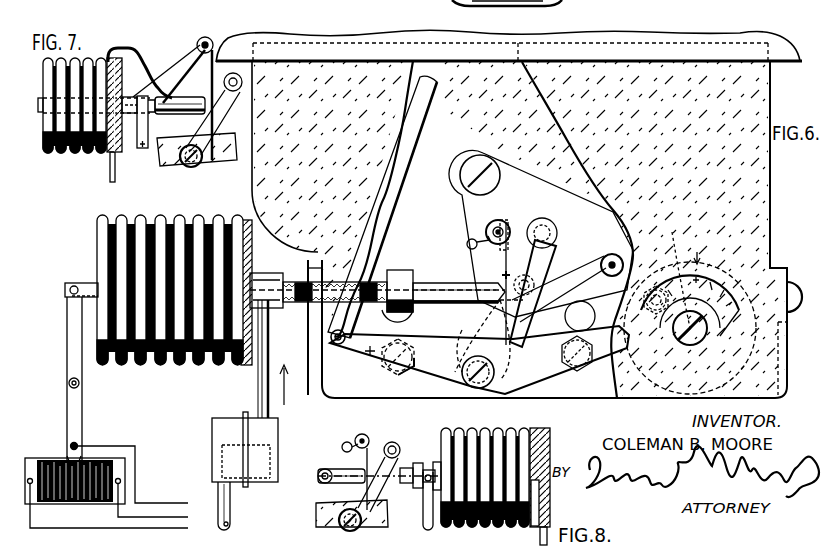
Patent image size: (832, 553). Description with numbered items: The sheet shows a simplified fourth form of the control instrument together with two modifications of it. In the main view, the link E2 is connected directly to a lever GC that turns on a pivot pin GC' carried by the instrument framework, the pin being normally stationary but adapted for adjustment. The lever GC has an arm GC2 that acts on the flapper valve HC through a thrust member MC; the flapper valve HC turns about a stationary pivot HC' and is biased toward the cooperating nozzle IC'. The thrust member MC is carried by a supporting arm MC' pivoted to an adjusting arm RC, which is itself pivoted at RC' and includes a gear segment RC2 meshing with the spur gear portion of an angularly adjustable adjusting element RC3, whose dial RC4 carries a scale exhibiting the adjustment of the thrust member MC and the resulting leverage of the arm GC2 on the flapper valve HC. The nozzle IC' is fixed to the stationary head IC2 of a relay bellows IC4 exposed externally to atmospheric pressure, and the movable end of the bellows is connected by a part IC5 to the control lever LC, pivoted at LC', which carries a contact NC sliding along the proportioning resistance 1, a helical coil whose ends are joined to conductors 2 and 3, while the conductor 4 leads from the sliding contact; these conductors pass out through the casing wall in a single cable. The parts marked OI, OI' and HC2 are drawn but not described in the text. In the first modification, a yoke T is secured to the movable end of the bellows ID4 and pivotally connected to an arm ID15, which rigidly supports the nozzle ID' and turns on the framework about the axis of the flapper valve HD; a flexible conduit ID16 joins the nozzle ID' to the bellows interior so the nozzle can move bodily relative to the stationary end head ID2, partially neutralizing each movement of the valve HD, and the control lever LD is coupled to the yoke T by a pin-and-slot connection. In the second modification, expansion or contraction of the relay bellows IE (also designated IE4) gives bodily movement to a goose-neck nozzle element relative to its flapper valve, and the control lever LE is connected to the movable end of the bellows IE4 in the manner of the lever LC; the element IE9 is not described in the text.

In FIG. 7, the flexible conduit ID16 is at (130, 50).
In FIG. 7, the arm ID15 is at (179, 68).
In FIG. 7, the nozzle ID' is at (180, 117).
In FIG. 7, the flapper valve HD is at (215, 117).
In FIG. 7, the yoke T is at (40, 108).
In FIG. 7, the relay bellows ID4 is at (72, 152).
In FIG. 7, the rod OI is at (92, 176).
In FIG. 8, the rod OI is at (527, 538).
In FIG. 7, the stationary end head ID2 is at (122, 150).
In FIG. 7, the control lever LD is at (143, 150).
In FIG. 6, the link E2 is at (420, 134).
In FIG. 6, the nozzle IC' is at (377, 280).
In FIG. 6, the stationary head IC2 is at (250, 270).
In FIG. 6, the relay bellows IC4 is at (152, 365).
In FIG. 6, the connecting part IC5 is at (86, 285).
In FIG. 6, the control lever LC is at (89, 387).
In FIG. 6, the pivot LC' is at (54, 382).
In FIG. 6, the contact NC is at (70, 468).
In FIG. 6, the electrical resistance 1 is at (50, 460).
In FIG. 6, the conductor 2 is at (118, 528).
In FIG. 6, the conductor 3 is at (150, 517).
In FIG. 6, the conductor 4 is at (135, 462).
In FIG. 6, the solenoid OI' is at (250, 415).
In FIG. 6, the lever GC is at (429, 364).
In FIG. 6, the pivot pin GC' is at (412, 321).
In FIG. 6, the arm GC2 is at (513, 330).
In FIG. 6, the thrust member MC is at (479, 365).
In FIG. 6, the supporting arm MC' is at (556, 316).
In FIG. 6, the flapper valve HC is at (541, 249).
In FIG. 6, the stationary pivot HC' is at (490, 274).
In FIG. 6, the hook HC2 is at (498, 250).
In FIG. 6, the adjusting arm RC is at (571, 275).
In FIG. 6, the pivot RC' is at (595, 253).
In FIG. 6, the gear segment RC2 is at (640, 390).
In FIG. 6, the adjusting element RC3 is at (706, 333).
In FIG. 6, the dial RC4 is at (719, 294).
In FIG. 8, the end plate IE9 is at (440, 460).
In FIG. 8, the relay bellows IE is at (345, 482).
In FIG. 8, the control lever LE is at (425, 500).
In FIG. 8, the bellows IE4 is at (466, 522).